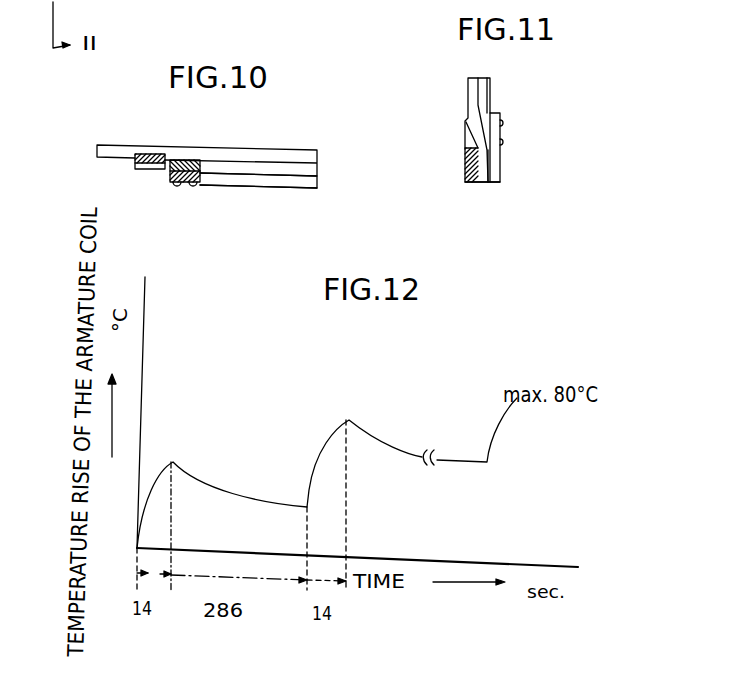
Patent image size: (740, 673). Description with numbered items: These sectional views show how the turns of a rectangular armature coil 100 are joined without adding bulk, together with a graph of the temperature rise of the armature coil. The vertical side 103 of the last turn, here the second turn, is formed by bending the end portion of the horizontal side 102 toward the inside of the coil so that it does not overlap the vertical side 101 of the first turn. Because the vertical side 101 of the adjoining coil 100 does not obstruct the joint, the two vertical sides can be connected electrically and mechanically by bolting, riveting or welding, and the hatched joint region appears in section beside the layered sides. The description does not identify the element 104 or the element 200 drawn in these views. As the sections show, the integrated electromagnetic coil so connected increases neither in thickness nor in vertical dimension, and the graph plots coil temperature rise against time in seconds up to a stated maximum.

In FIG. 11, the coil 100 is at (466, 98).
In FIG. 10, the vertical side of the first turn 101 is at (152, 153).
In FIG. 11, the vertical side of the first turn 101 is at (470, 141).
In FIG. 11, the horizontal side 102 is at (492, 96).
In FIG. 10, the vertical side of the last turn 103 is at (184, 160).
In FIG. 11, the vertical side of the last turn 103 is at (489, 120).
In FIG. 10, the joint portion 104 is at (175, 184).
In FIG. 11, the joint portion 104 is at (492, 145).
In FIG. 10, the commutator segment 200 is at (238, 178).
In FIG. 11, the commutator segment 200 is at (489, 184).